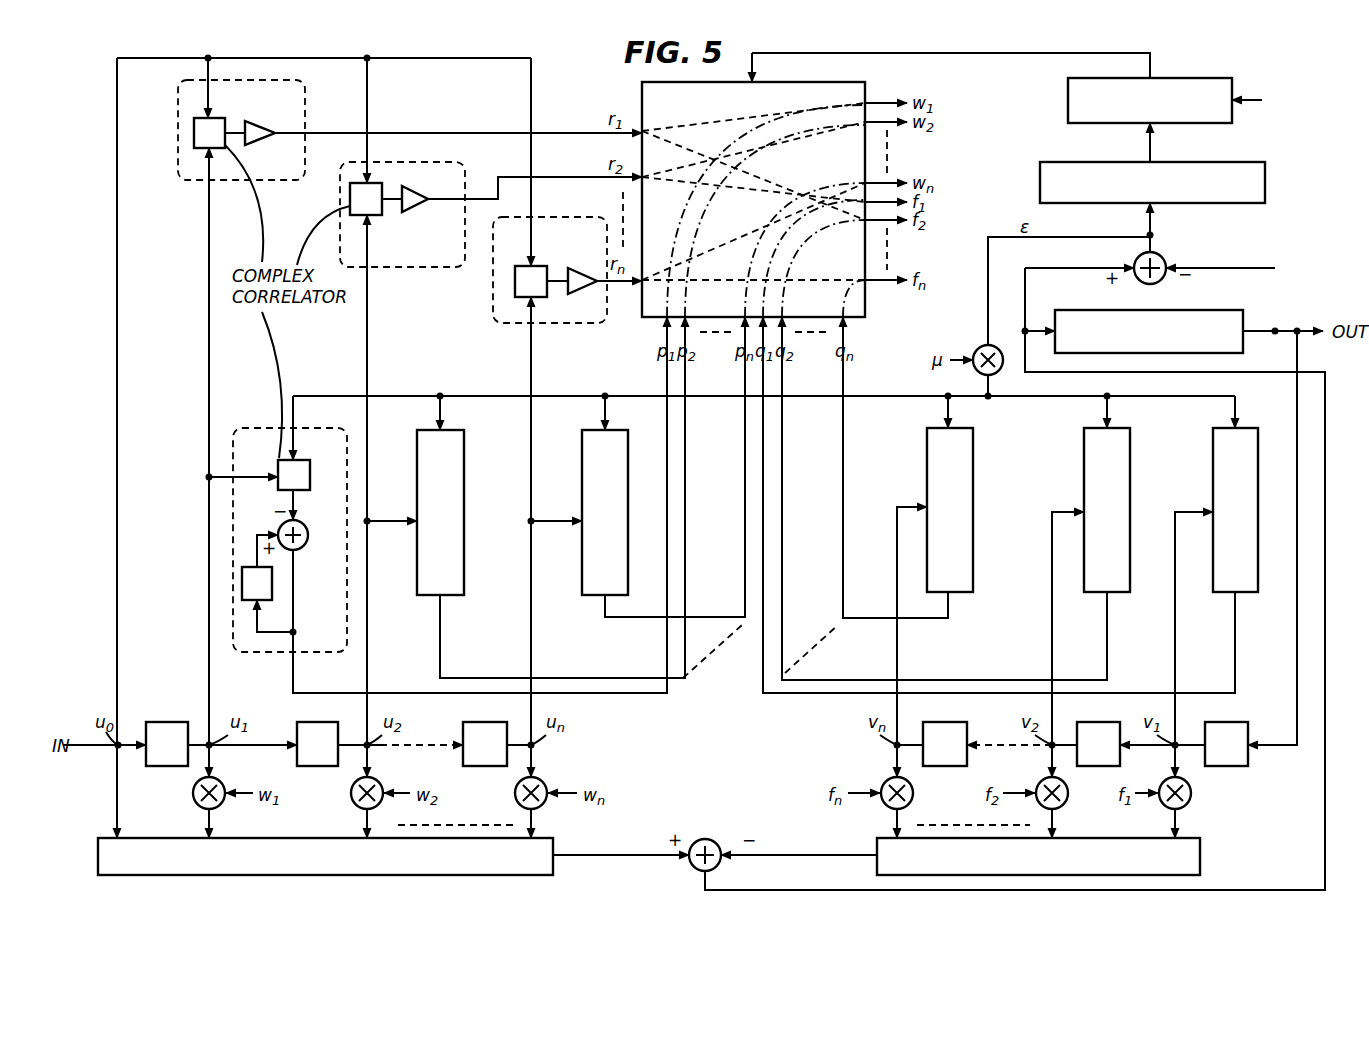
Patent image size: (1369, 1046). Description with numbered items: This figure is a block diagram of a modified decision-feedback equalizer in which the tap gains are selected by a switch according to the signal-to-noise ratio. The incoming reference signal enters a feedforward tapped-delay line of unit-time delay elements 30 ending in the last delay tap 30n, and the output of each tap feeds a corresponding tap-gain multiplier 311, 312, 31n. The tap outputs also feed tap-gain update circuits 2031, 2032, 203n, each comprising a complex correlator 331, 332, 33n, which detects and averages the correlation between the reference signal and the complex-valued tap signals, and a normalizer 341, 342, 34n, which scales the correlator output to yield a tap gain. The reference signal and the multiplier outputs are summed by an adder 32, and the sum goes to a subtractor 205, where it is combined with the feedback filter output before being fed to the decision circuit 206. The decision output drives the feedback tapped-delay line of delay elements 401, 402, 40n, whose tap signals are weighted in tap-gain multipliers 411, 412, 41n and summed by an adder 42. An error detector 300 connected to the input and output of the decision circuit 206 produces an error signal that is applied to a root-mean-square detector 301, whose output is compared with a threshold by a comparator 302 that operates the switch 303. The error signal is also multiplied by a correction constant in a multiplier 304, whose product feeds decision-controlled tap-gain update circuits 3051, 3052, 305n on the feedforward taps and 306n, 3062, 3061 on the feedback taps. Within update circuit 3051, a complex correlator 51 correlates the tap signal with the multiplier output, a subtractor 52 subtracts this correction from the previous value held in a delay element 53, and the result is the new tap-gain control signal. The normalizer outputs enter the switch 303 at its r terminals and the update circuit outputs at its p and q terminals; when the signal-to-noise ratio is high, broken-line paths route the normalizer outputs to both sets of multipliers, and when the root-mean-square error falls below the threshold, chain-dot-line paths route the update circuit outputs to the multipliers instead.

The tap-gain update circuit 2031 is at (186, 181).
The tap-gain update circuit 2032 is at (422, 267).
The tap-gain update circuit 203n is at (577, 323).
The complex correlator 331 is at (222, 122).
The complex correlator 332 is at (378, 217).
The complex correlator 33n is at (515, 284).
The normalizer 341 is at (262, 122).
The normalizer 342 is at (417, 207).
The normalizer 34n is at (575, 268).
The switch 303 is at (866, 100).
The comparator 302 is at (1233, 112).
The root-mean-square detector 301 is at (1265, 182).
The error detector 300 is at (1162, 260).
The decision circuit 206 is at (1205, 312).
The multiplier 304 is at (977, 350).
The decision-controlled tap-gain update circuit 3051 is at (243, 428).
The decision-controlled tap-gain update circuit 3052 is at (464, 448).
The decision-controlled tap-gain update circuit 305n is at (590, 595).
The decision-controlled tap-gain update circuit 306n is at (927, 458).
The decision-controlled tap-gain update circuit 3062 is at (1084, 458).
The decision-controlled tap-gain update circuit 3061 is at (1213, 458).
The complex correlator 51 is at (308, 472).
The subtractor 52 is at (305, 530).
The delay element 53 is at (242, 583).
The unit-time delay elements 30 is at (167, 766).
The unit-time delay element 30n is at (485, 766).
The tap-gain multiplier 311 is at (222, 785).
The tap-gain multiplier 312 is at (380, 785).
The tap-gain multiplier 31n is at (544, 785).
The adder 32 is at (553, 845).
The subtractor 205 is at (705, 839).
The tap-gain multiplier 41n is at (886, 785).
The unit-time delay element 40n is at (950, 766).
The tap-gain multiplier 412 is at (1041, 785).
The unit-time delay element 402 is at (1098, 766).
The tap-gain multiplier 411 is at (1164, 785).
The unit-time delay element 401 is at (1226, 766).
The adder 42 is at (1200, 845).